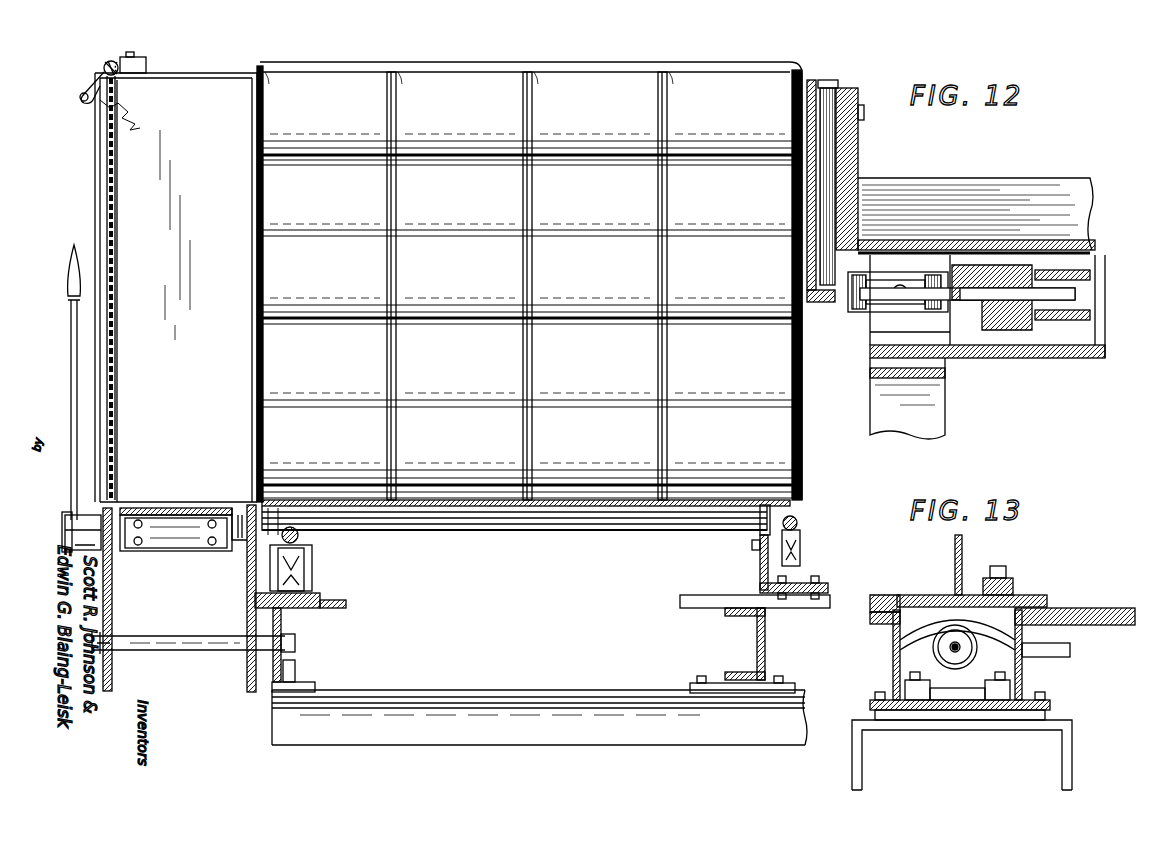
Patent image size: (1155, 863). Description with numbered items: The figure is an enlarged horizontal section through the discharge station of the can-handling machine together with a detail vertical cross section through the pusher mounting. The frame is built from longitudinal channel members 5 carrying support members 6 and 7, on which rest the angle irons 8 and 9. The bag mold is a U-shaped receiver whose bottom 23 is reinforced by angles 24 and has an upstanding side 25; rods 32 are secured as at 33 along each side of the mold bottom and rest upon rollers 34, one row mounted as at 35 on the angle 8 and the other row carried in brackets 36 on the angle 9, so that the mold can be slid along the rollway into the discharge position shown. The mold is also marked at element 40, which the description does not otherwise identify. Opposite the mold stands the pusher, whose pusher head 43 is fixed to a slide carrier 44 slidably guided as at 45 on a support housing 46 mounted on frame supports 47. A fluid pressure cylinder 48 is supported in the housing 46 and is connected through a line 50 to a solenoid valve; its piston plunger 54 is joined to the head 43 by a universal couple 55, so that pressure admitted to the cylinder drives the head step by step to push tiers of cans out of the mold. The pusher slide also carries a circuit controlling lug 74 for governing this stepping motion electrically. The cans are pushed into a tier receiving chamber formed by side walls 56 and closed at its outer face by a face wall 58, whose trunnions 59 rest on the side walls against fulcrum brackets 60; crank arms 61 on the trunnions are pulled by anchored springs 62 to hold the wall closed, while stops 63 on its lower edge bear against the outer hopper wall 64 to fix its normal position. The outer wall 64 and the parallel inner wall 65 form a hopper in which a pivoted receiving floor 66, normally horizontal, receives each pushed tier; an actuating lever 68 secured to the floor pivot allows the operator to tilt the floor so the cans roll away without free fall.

In FIG. 12, the channel member 5 is at (288, 612).
In FIG. 12, the support member 6 is at (680, 603).
In FIG. 12, the support member 7 is at (348, 605).
In FIG. 12, the angle iron 8 is at (760, 562).
In FIG. 12, the angle iron 9 is at (318, 600).
In FIG. 12, the bottom 23 is at (562, 520).
In FIG. 12, the angle 24 is at (640, 518).
In FIG. 12, the side 25 is at (478, 100).
In FIG. 12, the rod 32 is at (286, 525).
In FIG. 12, the securing point 33 is at (797, 520).
In FIG. 12, the roller 34 is at (296, 540).
In FIG. 12, the roller mounting 35 is at (745, 545).
In FIG. 12, the bracket 36 is at (302, 560).
In FIG. 12, the shelf 40 is at (415, 90).
In FIG. 12, the pusher head 43 is at (856, 148).
In FIG. 12, the slide carrier 44 is at (990, 240).
In FIG. 13, the slide carrier 44 is at (928, 595).
In FIG. 12, the slide guide 45 is at (1090, 240).
In FIG. 13, the slide guide 45 is at (890, 598).
In FIG. 12, the support housing 46 is at (1080, 358).
In FIG. 13, the support housing 46 is at (893, 672).
In FIG. 12, the frame support 47 is at (930, 422).
In FIG. 13, the frame support 47 is at (1064, 772).
In FIG. 12, the fluid pressure cylinder 48 is at (1080, 305).
In FIG. 13, the fluid pressure cylinder 48 is at (935, 645).
In FIG. 13, the pressure and exhaust line 50 is at (1070, 650).
In FIG. 12, the piston plunger 54 is at (975, 300).
In FIG. 13, the piston plunger 54 is at (960, 650).
In FIG. 12, the universal couple 55 is at (900, 285).
In FIG. 12, the side wall 56 is at (230, 90).
In FIG. 12, the face wall 58 is at (108, 200).
In FIG. 12, the trunnion 59 is at (106, 64).
In FIG. 12, the fulcrum bracket 60 is at (140, 58).
In FIG. 12, the crank arm 61 is at (85, 82).
In FIG. 12, the anchored spring 62 is at (135, 125).
In FIG. 12, the stop 63 is at (100, 520).
In FIG. 12, the outer hopper wall 64 is at (112, 608).
In FIG. 12, the inner hopper wall 65 is at (247, 668).
In FIG. 12, the receiving floor 66 is at (200, 512).
In FIG. 12, the actuating lever 68 is at (70, 356).
In FIG. 13, the circuit controlling lug 74 is at (1010, 580).